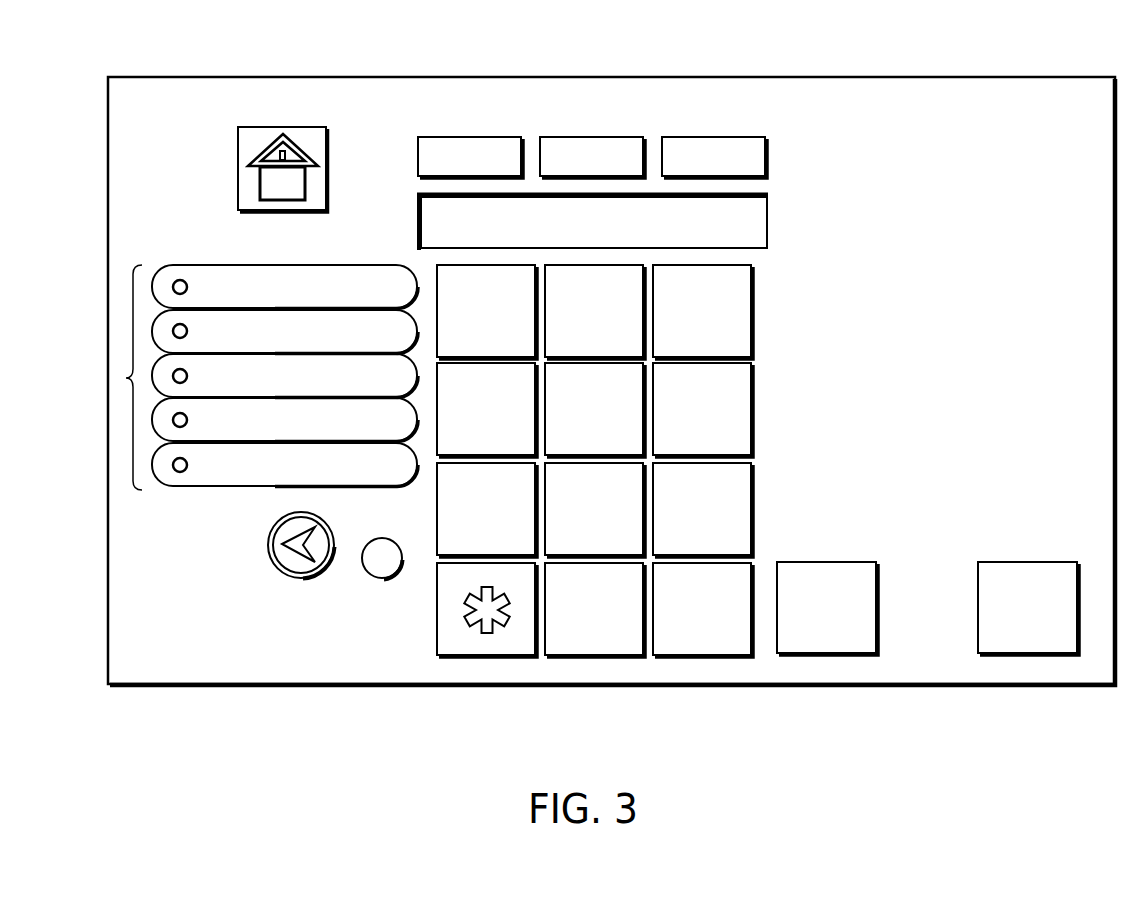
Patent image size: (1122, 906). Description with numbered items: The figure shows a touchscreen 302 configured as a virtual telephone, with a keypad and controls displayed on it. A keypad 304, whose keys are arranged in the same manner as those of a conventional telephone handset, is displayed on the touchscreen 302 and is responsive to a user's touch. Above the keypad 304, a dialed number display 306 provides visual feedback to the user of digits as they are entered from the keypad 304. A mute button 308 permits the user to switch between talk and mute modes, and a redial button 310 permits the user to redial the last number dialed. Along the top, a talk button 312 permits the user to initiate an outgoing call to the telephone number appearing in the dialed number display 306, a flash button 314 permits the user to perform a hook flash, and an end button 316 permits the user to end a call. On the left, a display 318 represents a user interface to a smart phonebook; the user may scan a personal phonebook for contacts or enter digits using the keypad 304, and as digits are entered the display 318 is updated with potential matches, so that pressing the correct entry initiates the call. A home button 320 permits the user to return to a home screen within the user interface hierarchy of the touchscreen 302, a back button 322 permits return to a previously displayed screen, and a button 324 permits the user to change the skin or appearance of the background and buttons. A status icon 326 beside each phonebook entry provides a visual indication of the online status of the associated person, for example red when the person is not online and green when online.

The touchscreen 302 is at (705, 687).
The keypad 304 is at (436, 634).
The dialed number display 306 is at (769, 216).
The mute button 308 is at (828, 657).
The redial button 310 is at (1028, 657).
The talk button 312 is at (467, 137).
The flash button 314 is at (592, 137).
The end button 316 is at (714, 137).
The display 318 is at (126, 378).
The home button 320 is at (238, 172).
The back button 322 is at (288, 578).
The button 324 is at (366, 578).
The status icon 326 is at (178, 472).